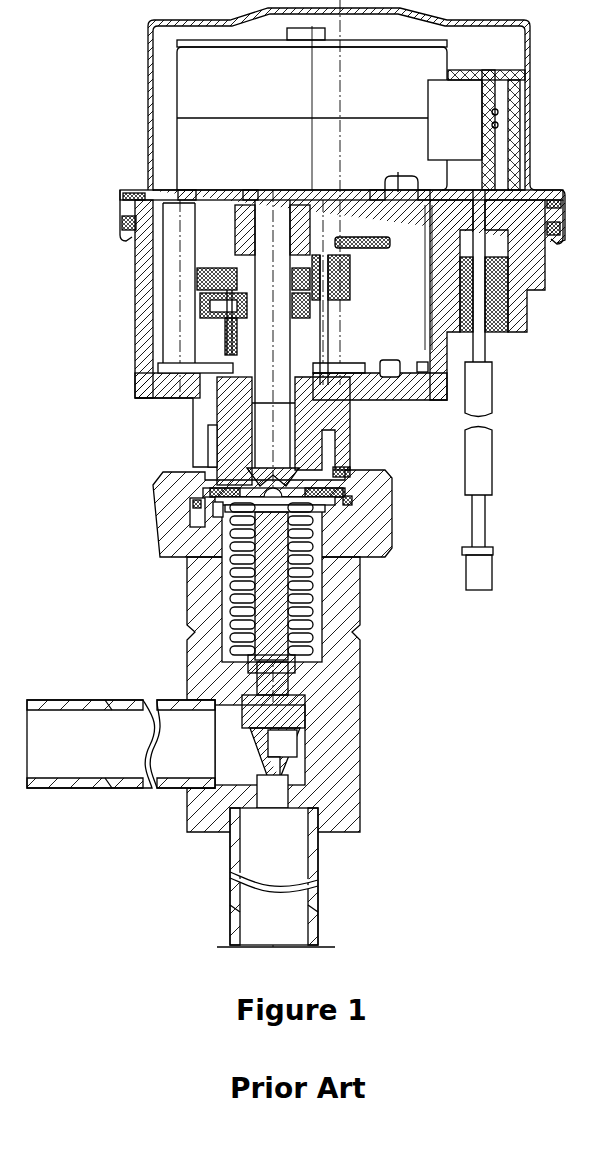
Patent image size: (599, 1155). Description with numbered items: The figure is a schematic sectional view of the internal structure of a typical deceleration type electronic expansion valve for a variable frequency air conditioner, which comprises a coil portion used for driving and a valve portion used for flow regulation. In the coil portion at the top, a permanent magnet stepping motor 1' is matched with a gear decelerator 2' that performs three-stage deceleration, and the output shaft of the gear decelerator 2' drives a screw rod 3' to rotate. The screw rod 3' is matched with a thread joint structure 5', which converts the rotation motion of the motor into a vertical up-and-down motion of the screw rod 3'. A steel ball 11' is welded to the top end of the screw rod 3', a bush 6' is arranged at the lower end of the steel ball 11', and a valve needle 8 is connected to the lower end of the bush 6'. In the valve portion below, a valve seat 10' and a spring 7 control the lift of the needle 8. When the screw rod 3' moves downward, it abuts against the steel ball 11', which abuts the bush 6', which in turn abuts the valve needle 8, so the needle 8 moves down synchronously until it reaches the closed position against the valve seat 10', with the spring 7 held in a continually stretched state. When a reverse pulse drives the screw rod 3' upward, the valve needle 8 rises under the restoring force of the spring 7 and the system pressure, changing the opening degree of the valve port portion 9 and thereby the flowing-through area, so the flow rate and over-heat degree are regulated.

The permanent magnet stepping motor 1' is at (310, 126).
The gear decelerator 2' is at (222, 310).
The screw rod 3' is at (178, 422).
The thread joint structure 5' is at (359, 427).
The bush 6' is at (326, 560).
The spring 7 is at (228, 600).
The valve needle 8 is at (278, 762).
The valve port portion 9 is at (277, 792).
The valve seat 10' is at (242, 651).
The steel ball 11' is at (323, 523).